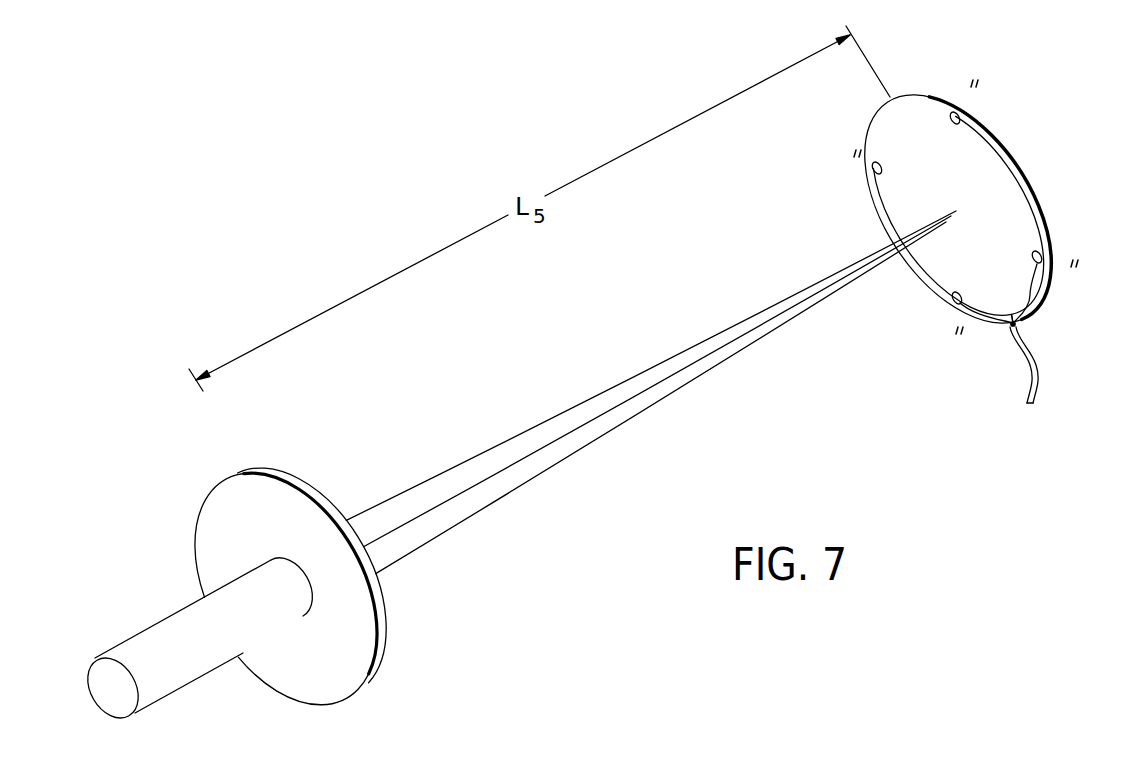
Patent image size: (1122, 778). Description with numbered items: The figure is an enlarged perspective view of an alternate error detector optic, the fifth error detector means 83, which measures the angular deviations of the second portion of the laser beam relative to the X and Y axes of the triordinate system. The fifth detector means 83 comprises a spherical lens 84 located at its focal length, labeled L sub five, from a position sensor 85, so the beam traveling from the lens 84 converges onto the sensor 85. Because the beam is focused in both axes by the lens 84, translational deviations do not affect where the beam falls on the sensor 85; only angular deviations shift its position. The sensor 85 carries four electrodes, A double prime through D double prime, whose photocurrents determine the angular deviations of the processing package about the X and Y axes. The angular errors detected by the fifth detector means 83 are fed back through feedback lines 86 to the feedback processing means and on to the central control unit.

The fifth error detector means 83 is at (386, 238).
The spherical lens 84 is at (352, 666).
The position sensor 85 is at (987, 173).
The feedback lines 86 is at (1038, 378).